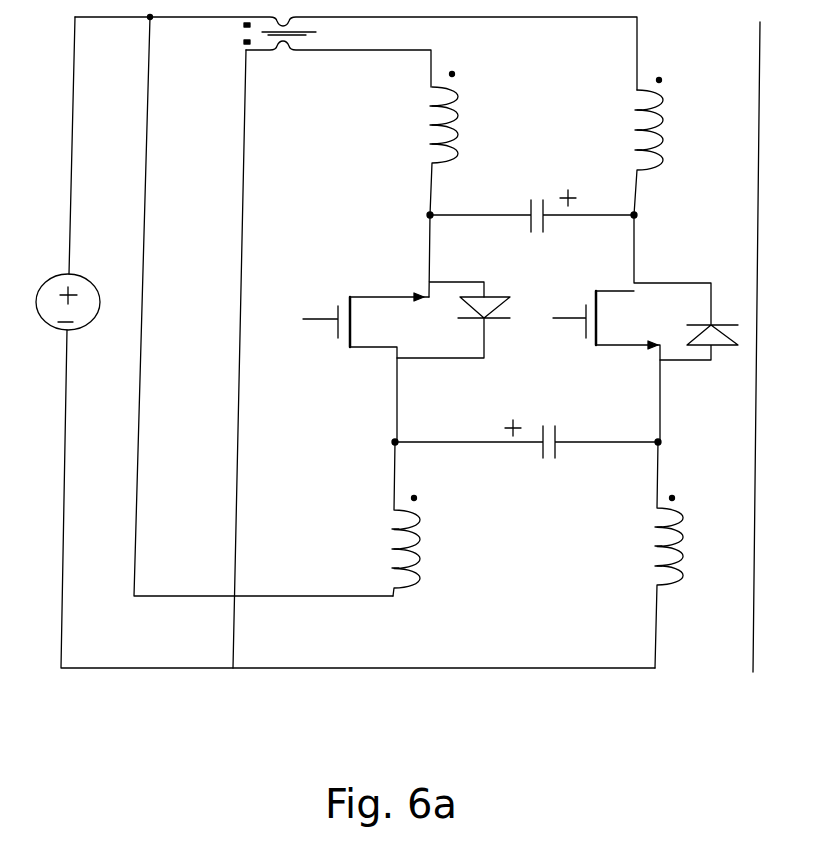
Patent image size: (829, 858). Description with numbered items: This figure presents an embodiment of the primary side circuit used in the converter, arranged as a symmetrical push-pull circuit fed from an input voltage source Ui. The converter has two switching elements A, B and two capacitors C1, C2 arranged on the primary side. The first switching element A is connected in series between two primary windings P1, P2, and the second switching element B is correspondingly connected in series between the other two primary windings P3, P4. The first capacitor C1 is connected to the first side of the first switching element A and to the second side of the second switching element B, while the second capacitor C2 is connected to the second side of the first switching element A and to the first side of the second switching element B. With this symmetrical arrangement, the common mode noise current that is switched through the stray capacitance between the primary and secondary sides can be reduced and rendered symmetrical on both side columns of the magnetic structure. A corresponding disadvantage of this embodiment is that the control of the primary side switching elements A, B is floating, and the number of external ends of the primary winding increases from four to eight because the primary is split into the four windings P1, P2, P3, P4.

The input voltage Ui is at (62, 274).
The primary winding P1 is at (463, 134).
The primary winding P2 is at (423, 538).
The primary winding P3 is at (668, 141).
The primary winding P4 is at (676, 536).
The first capacitor C1 is at (532, 201).
The second capacitor C2 is at (526, 428).
The first switching element A is at (387, 292).
The second switching element B is at (622, 289).